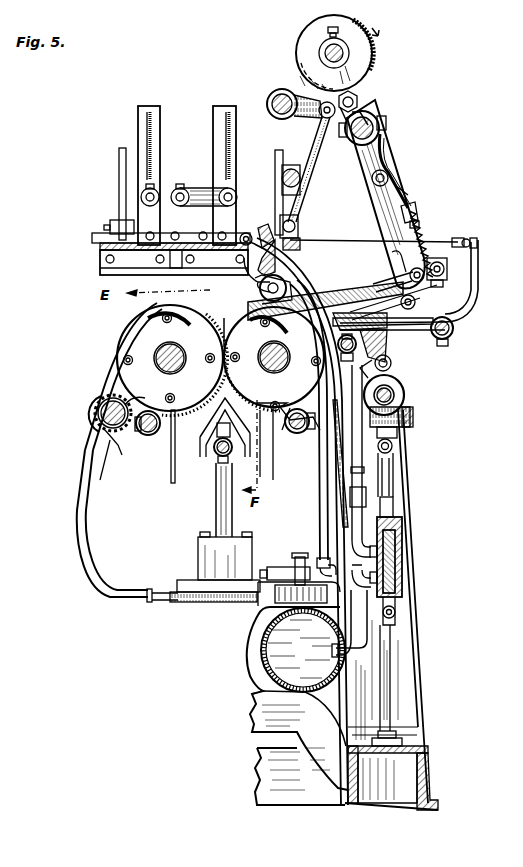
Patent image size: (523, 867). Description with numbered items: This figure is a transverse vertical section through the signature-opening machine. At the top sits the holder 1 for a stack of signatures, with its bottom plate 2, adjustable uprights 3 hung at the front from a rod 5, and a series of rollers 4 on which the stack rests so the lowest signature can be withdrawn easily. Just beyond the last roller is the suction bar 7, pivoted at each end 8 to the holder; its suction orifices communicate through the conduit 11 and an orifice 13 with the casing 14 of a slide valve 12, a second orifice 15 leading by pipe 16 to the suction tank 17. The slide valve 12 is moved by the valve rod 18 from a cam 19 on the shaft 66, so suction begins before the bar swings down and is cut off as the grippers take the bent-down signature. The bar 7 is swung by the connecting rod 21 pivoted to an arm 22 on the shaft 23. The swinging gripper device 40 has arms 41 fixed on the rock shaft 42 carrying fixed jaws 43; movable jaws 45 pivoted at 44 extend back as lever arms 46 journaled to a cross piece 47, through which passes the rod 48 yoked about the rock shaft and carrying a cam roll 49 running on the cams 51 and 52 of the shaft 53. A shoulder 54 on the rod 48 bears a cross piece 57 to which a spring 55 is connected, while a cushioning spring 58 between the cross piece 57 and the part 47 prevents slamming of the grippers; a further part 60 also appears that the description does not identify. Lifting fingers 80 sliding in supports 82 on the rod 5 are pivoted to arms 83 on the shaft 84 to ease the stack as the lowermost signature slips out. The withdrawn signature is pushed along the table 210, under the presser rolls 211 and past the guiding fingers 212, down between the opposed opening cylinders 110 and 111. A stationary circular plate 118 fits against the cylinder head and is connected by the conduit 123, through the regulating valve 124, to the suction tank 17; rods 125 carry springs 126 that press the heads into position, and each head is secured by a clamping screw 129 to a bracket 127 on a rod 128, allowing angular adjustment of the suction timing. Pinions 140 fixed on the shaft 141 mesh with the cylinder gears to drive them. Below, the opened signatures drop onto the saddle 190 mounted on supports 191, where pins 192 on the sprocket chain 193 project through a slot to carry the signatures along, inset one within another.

The holder 1 is at (188, 165).
The bottom plate 2 is at (102, 258).
The uprights 3 is at (143, 132).
The rollers 4 is at (176, 234).
The rod 5 is at (291, 170).
The bar 7 is at (265, 228).
The pivot end 8 is at (246, 233).
The conduit 11 is at (328, 310).
The slide valve 12 is at (404, 550).
The orifice 13 is at (404, 534).
The valve casing 14 is at (404, 566).
The second orifice 15 is at (404, 585).
The pipe 16 is at (354, 620).
The suction tank 17 is at (261, 650).
The valve rod 18 is at (394, 465).
The cam 19 is at (412, 420).
The connecting rod 21 is at (315, 157).
The arm 22 is at (305, 118).
The shaft 23 is at (272, 95).
The swinging gripper device 40 is at (384, 210).
The arms 41 is at (421, 222).
The rock shaft 42 is at (376, 126).
The gripper jaws 43 is at (378, 286).
The pivot 44 is at (415, 303).
The movable jaws 45 is at (380, 294).
The lever arms 46 is at (430, 292).
The cross piece 47 is at (446, 268).
The rod 48 is at (393, 147).
The cam roll 49 is at (360, 96).
The cam 51 is at (296, 64).
The cam 52 is at (373, 57).
The shaft 53 is at (330, 51).
The shoulder 54 is at (414, 203).
The spring 55 is at (403, 192).
The cross piece 57 is at (420, 222).
The cushioning spring 58 is at (468, 240).
The arm 60 is at (366, 108).
The shaft 66 is at (397, 390).
The lifting fingers 80 is at (374, 241).
The supports 82 is at (295, 224).
The arms 83 is at (476, 297).
The shaft 84 is at (455, 330).
The cylinder 110 is at (140, 344).
The cylinder 111 is at (293, 430).
The circular plate 118 is at (112, 378).
The conduit 123 is at (79, 528).
The valve 124 is at (272, 600).
The rods 125 is at (174, 398).
The springs 126 is at (209, 354).
The bracket 127 is at (303, 433).
The rod 128 is at (142, 437).
The clamping screw 129 is at (95, 406).
The pinions 140 is at (102, 436).
The shaft 141 is at (112, 442).
The saddle 190 is at (216, 447).
The supports 191 is at (218, 508).
The pins 192 is at (222, 428).
The sprocket chain 193 is at (200, 445).
The table 210 is at (338, 297).
The presser rolls 211 is at (285, 287).
The guiding fingers 212 is at (256, 322).